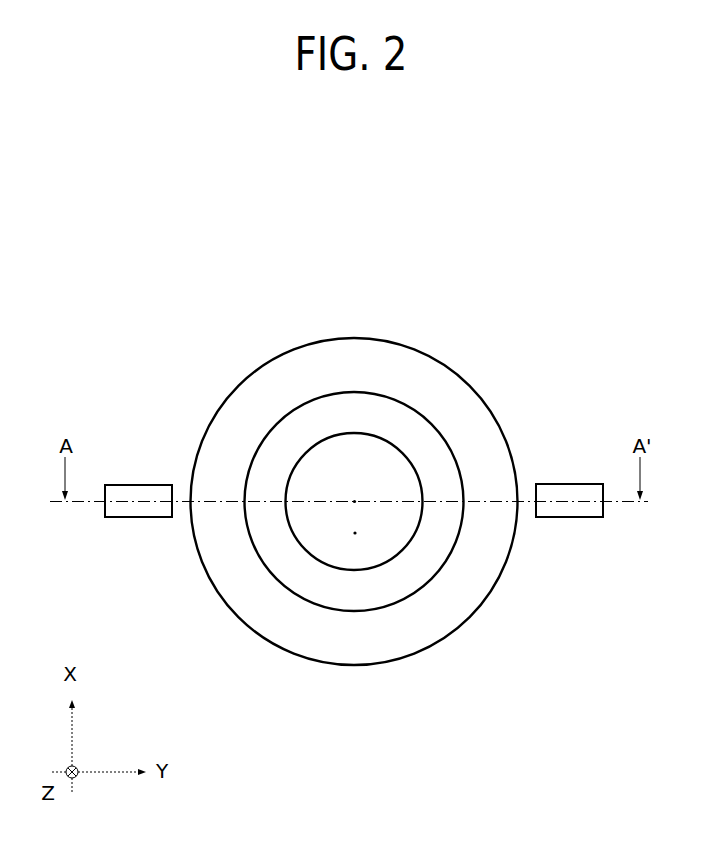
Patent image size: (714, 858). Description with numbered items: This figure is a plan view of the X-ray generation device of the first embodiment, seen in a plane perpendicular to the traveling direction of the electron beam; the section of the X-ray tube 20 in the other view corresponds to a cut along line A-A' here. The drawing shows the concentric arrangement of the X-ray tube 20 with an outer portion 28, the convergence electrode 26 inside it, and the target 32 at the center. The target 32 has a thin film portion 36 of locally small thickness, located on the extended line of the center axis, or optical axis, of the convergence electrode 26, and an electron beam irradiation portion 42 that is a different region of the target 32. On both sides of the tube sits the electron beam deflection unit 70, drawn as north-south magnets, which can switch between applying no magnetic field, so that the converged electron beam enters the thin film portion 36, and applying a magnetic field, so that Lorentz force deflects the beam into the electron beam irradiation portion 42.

The X-ray tube 20 is at (335, 665).
The outer peripheral portion 28 is at (463, 345).
The convergence electrode 26 is at (282, 410).
The target 32 is at (393, 560).
The thin film portion 36 is at (355, 502).
The electron beam irradiation portion 42 is at (355, 533).
The electron beam deflection unit 70 is at (140, 518).